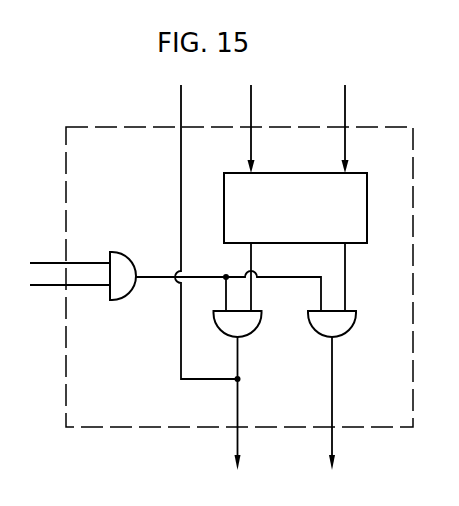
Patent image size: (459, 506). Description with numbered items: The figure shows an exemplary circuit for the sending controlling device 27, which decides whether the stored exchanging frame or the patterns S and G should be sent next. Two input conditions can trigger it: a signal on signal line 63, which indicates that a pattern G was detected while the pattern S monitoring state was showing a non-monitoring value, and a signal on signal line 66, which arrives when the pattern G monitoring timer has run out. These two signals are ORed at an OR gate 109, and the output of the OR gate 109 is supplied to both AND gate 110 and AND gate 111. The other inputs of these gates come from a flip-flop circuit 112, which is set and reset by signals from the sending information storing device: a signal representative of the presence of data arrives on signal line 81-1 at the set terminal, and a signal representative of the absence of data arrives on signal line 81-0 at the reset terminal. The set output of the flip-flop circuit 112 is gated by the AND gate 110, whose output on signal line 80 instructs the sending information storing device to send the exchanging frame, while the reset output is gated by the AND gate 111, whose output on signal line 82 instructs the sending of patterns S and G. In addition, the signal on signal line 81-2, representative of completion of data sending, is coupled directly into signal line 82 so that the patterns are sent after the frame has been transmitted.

The sending controlling device 27 is at (414, 184).
The flip-flop circuit 112 is at (367, 177).
The signal line 81-2 is at (181, 108).
The signal line 81-0 is at (251, 113).
The signal line 81-1 is at (345, 113).
The signal line 63 is at (50, 261).
The signal line 66 is at (55, 287).
The OR gate 109 is at (144, 245).
The AND gate 111 is at (261, 318).
The AND gate 110 is at (356, 318).
The signal line 82 is at (234, 450).
The signal line 80 is at (333, 441).